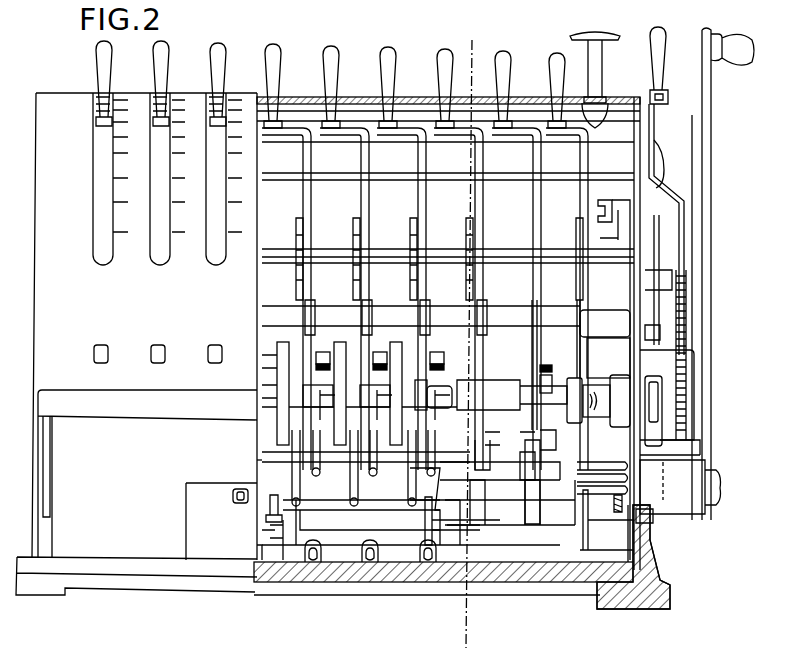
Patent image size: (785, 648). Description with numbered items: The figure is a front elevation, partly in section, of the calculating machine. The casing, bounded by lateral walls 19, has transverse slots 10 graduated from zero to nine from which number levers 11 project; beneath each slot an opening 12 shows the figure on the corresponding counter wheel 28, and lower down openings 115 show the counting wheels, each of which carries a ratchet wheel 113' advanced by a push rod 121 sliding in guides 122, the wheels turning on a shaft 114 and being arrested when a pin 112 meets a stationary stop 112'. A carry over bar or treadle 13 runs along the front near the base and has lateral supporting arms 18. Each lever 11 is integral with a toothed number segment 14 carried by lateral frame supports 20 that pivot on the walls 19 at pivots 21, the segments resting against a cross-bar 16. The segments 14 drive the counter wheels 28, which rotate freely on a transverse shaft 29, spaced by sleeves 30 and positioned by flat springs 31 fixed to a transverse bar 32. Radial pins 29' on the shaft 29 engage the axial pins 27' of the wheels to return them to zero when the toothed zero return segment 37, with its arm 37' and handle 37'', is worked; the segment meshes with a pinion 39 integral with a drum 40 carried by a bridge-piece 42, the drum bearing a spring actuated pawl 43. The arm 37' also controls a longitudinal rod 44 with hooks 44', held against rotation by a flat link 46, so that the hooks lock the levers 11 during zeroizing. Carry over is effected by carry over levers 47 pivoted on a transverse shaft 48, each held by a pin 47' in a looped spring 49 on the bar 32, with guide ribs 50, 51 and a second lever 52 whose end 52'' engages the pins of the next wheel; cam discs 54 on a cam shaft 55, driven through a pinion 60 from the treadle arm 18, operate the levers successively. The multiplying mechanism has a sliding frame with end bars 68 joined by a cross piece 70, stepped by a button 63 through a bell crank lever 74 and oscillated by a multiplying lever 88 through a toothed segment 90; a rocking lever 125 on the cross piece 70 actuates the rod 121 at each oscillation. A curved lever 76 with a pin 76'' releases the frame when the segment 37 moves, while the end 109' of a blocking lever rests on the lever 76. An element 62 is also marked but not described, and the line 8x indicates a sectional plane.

The transverse slots 10 is at (100, 187).
The number lever 11 is at (273, 58).
The opening 12 is at (92, 348).
The carry over bar or treadle 13 is at (135, 400).
The toothed number segment 14 is at (352, 262).
The stop or cross-bar 16 is at (322, 256).
The lateral supporting arm 18 is at (50, 455).
The lateral walls 19 is at (634, 558).
The lateral frame supports 20 is at (630, 247).
The pivots 21 is at (597, 211).
The axially projecting pin 27' is at (281, 361).
The counter wheel or drum 28 is at (283, 340).
The transverse shaft 29 is at (377, 378).
The radial pins 29' is at (246, 362).
The sleeves 30 is at (262, 386).
The flat spring 31 is at (262, 410).
The transverse bar 32 is at (262, 468).
The toothed zero return segment 37 is at (690, 337).
The arm 37' is at (670, 229).
The handle 37'' is at (674, 65).
The pinion 39 is at (686, 425).
The drum 40 is at (665, 447).
The bridge-piece 42 is at (684, 373).
The spring actuated pawl 43 is at (655, 405).
The longitudinal rod 44 is at (288, 257).
The hooks 44' is at (344, 258).
The flat link 46 is at (645, 103).
The carry over lever 47 is at (446, 363).
The pin 47' is at (559, 441).
The transverse shaft 48 is at (496, 323).
The spring 49 is at (318, 452).
The guide rib 50 is at (545, 380).
The guide rib 51 is at (540, 363).
The second lever 52 is at (505, 464).
The end of second lever 52'' is at (510, 442).
The cam disc 54 is at (530, 507).
The cam shaft 55 is at (552, 480).
The pinion 60 is at (590, 482).
The top plate 62 is at (515, 176).
The button 63 is at (578, 32).
The end bars 68 is at (600, 478).
The cross piece 70 is at (435, 522).
The bell crank lever 74 is at (549, 138).
The curved lever 76 is at (687, 502).
The pin 76'' is at (687, 538).
The multiplying lever 88 is at (706, 255).
The toothed segment 90 is at (656, 226).
The end of lever 109' is at (695, 280).
The pin 112 is at (411, 570).
The stationary stop 112' is at (232, 584).
The ratchet wheel 113' is at (222, 521).
The shaft 114 is at (280, 505).
The openings 115 is at (232, 495).
The push rod 121 is at (371, 560).
The guides 122 is at (440, 562).
The rocking lever 125 is at (432, 532).
The section line 8x is at (462, 643).